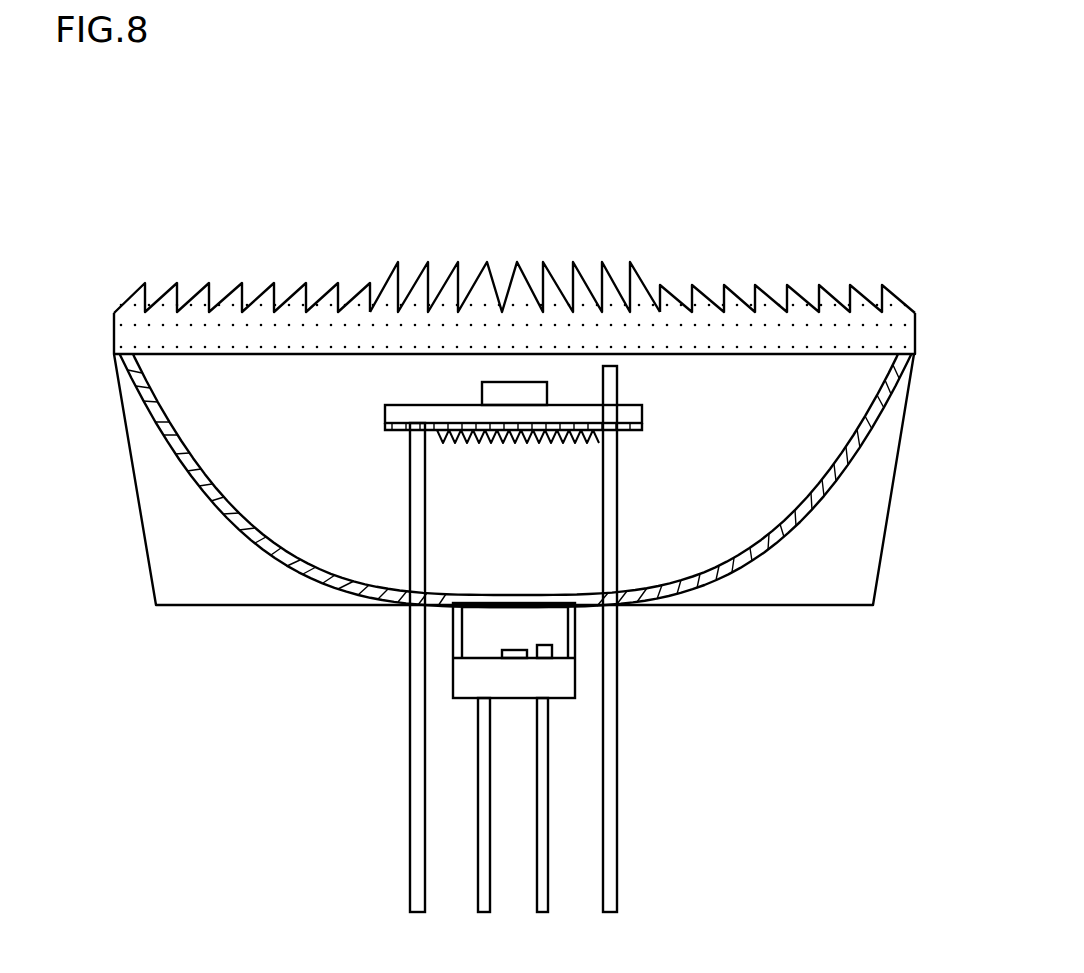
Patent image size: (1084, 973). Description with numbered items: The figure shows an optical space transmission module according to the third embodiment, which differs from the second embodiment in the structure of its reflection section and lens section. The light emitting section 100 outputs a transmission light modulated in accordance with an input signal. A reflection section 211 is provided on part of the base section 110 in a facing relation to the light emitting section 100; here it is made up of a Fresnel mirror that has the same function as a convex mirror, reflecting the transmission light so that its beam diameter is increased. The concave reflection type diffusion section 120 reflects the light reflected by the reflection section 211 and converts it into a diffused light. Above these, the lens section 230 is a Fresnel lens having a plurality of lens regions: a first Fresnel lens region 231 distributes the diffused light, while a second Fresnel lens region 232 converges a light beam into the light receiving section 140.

The light emitting section 100 is at (503, 667).
The base section 110 is at (570, 417).
The reflection type diffusion section 120 is at (157, 603).
The light receiving section 140 is at (500, 387).
The reflection section 211 is at (500, 442).
The lens section 230 is at (297, 327).
The first Fresnel lens region 231 is at (762, 268).
The second Fresnel lens region 232 is at (600, 255).